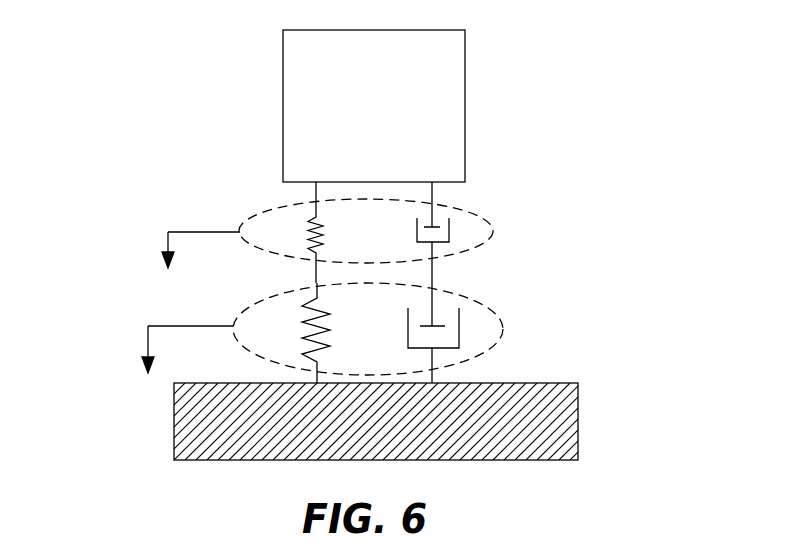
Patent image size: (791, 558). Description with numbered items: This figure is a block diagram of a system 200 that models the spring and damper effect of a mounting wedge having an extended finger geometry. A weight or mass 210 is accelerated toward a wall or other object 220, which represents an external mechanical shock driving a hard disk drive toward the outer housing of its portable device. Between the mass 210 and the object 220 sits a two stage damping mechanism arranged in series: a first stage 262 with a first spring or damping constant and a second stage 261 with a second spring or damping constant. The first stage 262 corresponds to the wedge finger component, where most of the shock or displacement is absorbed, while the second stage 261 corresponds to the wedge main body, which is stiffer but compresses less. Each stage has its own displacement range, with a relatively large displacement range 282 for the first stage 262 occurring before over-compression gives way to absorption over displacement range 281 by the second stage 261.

The system 200 is at (162, 87).
The mass 210 is at (430, 102).
The object 220 is at (578, 383).
The first stage 262 is at (493, 232).
The second stage 261 is at (503, 329).
The displacement range 282 is at (168, 232).
The displacement range 281 is at (142, 337).